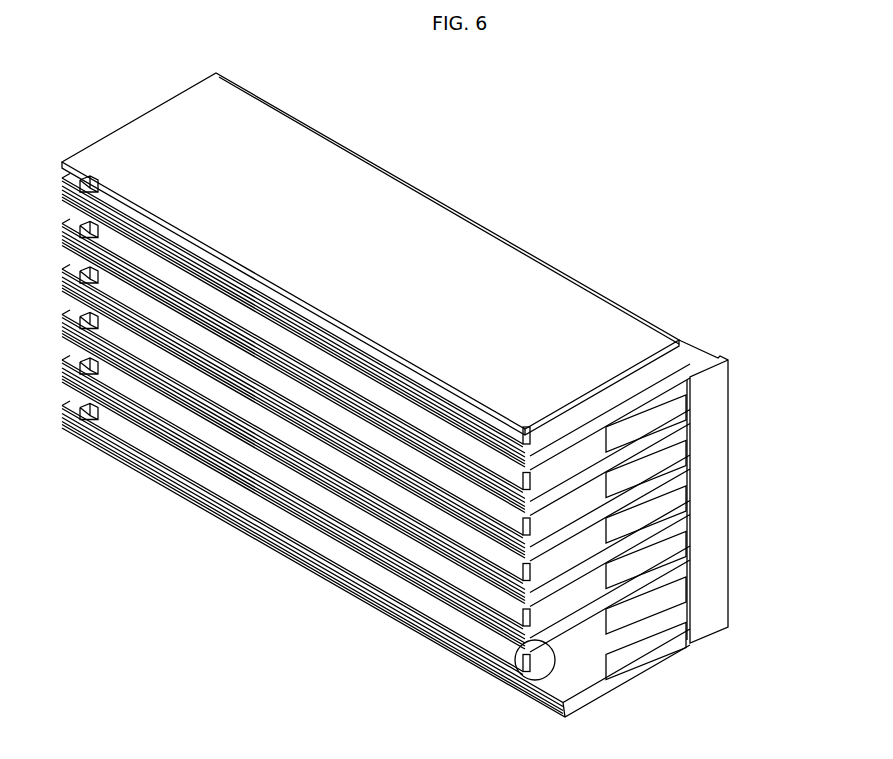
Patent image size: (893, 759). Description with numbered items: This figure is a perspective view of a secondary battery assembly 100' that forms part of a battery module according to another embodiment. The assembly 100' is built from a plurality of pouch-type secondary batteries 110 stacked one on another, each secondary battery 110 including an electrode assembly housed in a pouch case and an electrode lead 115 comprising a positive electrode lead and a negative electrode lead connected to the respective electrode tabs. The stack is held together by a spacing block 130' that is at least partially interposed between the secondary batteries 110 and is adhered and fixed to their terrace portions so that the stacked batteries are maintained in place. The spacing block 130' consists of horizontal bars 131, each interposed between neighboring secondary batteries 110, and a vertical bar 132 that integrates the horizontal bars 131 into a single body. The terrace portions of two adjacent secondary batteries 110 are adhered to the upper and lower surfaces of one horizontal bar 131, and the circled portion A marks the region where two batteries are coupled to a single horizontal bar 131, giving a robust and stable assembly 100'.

The secondary battery assembly 100' is at (461, 401).
The secondary battery 110 is at (555, 298).
The electrode lead 115 is at (642, 452).
The spacing block 130' is at (461, 528).
The horizontal bar 131 is at (590, 700).
The vertical bar 132 is at (715, 539).
The portion A is at (522, 677).